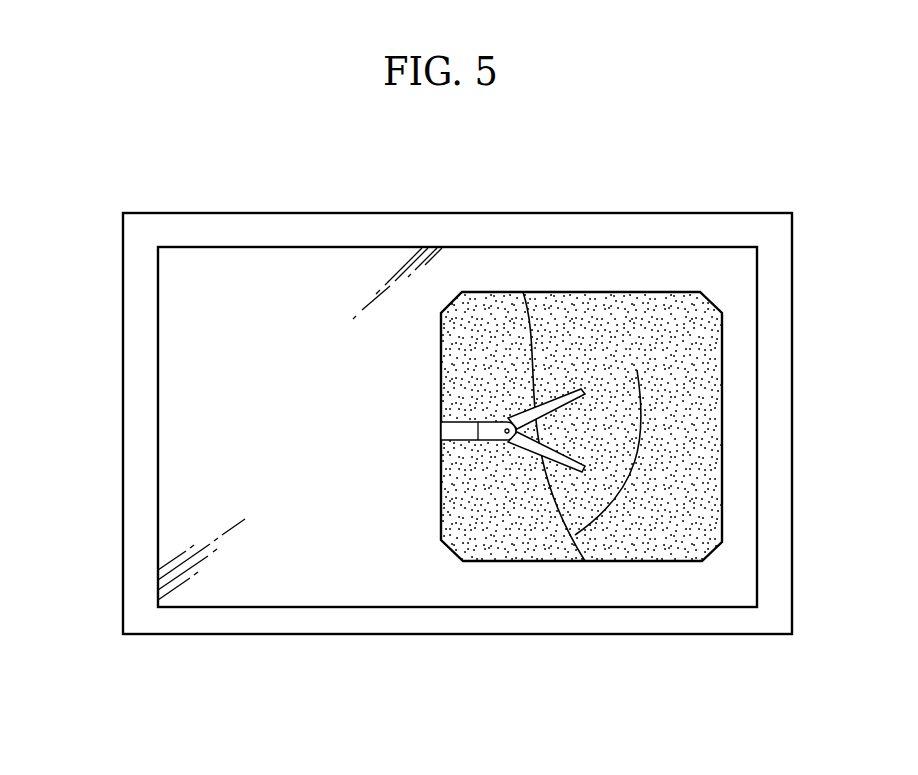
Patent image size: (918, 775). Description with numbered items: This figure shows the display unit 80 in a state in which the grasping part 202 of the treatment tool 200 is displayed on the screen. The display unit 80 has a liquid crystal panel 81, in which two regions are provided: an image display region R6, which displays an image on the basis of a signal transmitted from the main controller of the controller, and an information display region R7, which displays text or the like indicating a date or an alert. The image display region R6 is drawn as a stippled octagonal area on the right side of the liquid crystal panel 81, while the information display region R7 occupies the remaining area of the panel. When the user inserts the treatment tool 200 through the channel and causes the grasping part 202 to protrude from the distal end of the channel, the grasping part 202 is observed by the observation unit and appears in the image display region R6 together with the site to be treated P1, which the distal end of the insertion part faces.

The display unit 80 is at (150, 201).
The liquid crystal panel 81 is at (157, 317).
The information display region R7 is at (293, 265).
The image display region R6 is at (579, 305).
The site to be treated P1 is at (643, 548).
The treatment tool 200 is at (440, 430).
The grasping part 202 is at (518, 443).